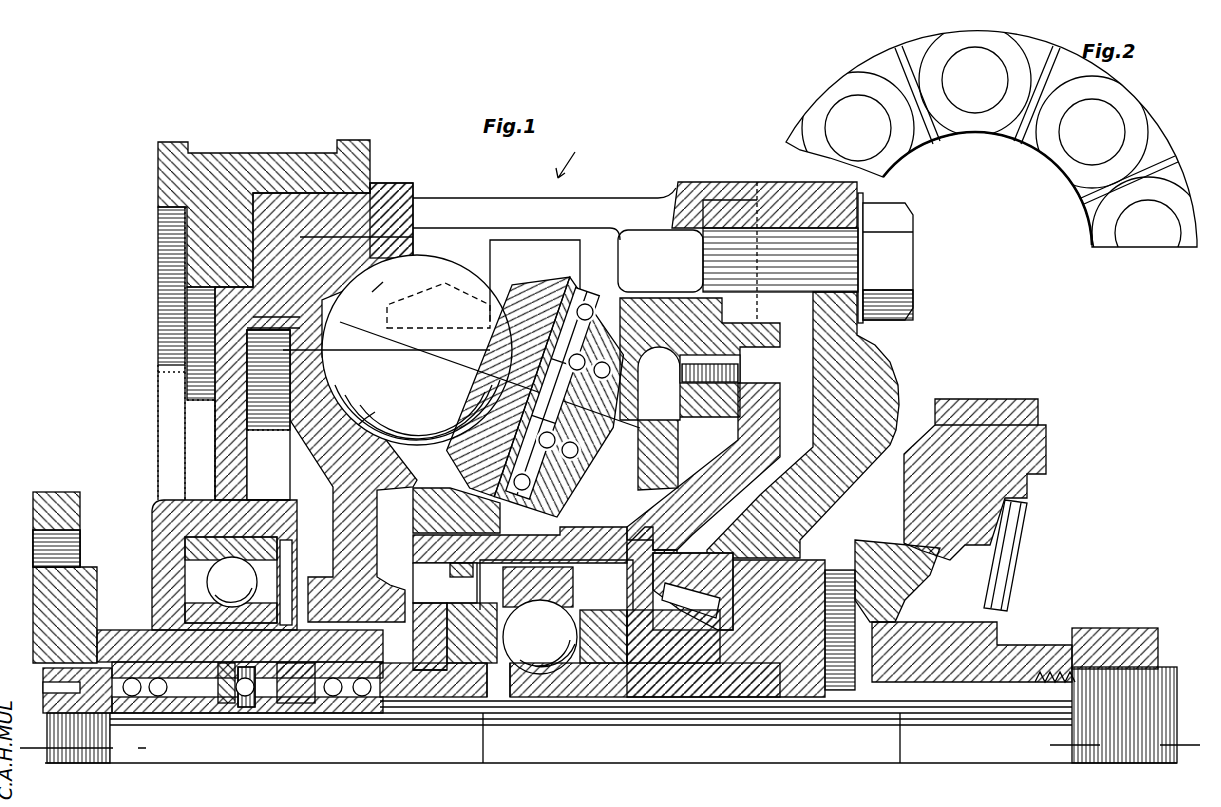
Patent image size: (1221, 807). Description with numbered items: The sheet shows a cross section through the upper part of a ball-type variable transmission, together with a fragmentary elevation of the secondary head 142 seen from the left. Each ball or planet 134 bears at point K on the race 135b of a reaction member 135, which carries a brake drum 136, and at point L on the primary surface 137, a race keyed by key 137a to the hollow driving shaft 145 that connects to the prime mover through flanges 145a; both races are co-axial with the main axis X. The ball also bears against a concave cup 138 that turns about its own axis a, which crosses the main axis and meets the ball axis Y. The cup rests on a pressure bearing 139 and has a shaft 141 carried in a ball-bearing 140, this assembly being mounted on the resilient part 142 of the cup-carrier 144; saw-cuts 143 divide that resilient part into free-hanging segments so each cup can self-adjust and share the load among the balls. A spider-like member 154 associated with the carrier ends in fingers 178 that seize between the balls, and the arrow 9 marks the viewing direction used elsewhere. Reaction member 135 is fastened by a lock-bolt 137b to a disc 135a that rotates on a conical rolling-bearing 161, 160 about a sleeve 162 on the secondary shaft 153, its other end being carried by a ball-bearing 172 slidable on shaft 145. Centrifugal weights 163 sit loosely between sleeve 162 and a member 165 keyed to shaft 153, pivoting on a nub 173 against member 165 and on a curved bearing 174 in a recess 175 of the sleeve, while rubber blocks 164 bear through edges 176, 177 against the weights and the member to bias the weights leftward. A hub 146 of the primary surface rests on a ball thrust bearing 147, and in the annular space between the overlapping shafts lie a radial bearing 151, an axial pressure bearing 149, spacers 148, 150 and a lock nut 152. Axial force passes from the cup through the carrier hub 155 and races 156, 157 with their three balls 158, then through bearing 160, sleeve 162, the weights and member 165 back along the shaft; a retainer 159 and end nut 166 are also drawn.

In FIG. 1, the ball 134 is at (432, 270).
In FIG. 1, the reaction member 135 is at (733, 172).
In FIG. 1, the disc 135a is at (862, 352).
In FIG. 1, the race 135b is at (418, 195).
In FIG. 1, the brake drum 136 is at (357, 142).
In FIG. 1, the primary surface 137 is at (318, 449).
In FIG. 1, the key 137a is at (413, 592).
In FIG. 1, the lock-bolt 137b is at (905, 262).
In FIG. 1, the cup 138 is at (527, 286).
In FIG. 1, the pressure bearing 139 is at (585, 285).
In FIG. 1, the ball-bearing 140 is at (612, 362).
In FIG. 1, the shaft 141 is at (606, 446).
In FIG. 1, the resilient part 142 is at (584, 490).
In FIG. 2, the resilient part 142 is at (950, 136).
In FIG. 2, the saw-cuts 143 is at (1085, 205).
In FIG. 1, the cup-carrier 144 is at (772, 418).
In FIG. 1, the driving shaft 145 is at (127, 640).
In FIG. 1, the flanges 145a is at (133, 503).
In FIG. 1, the hub 146 is at (392, 692).
In FIG. 1, the ball thrust bearing 147 is at (338, 707).
In FIG. 1, the spacing member 148 is at (291, 704).
In FIG. 1, the axial pressure bearing 149 is at (232, 704).
In FIG. 1, the spacing member 150 is at (215, 710).
In FIG. 1, the radial bearing 151 is at (157, 710).
In FIG. 1, the lock nut 152 is at (97, 677).
In FIG. 1, the secondary shaft 153 is at (1003, 763).
In FIG. 1, the member 154 is at (432, 527).
In FIG. 1, the hub 155 is at (438, 700).
In FIG. 1, the race 156 is at (497, 687).
In FIG. 1, the race 157 is at (600, 682).
In FIG. 1, the balls 158 is at (524, 660).
In FIG. 1, the retainer 159 is at (583, 581).
In FIG. 1, the conical rolling-bearing 160 is at (703, 660).
In FIG. 1, the conical rolling-bearing 161 is at (707, 586).
In FIG. 1, the sleeve 162 is at (763, 690).
In FIG. 1, the centrifugal weights 163 is at (992, 386).
In FIG. 1, the rubber blocks 164 is at (1010, 550).
In FIG. 1, the member 165 is at (990, 640).
In FIG. 1, the nut 166 is at (1112, 620).
In FIG. 1, the ball-bearing 172 is at (195, 548).
In FIG. 1, the bearing surface 173 is at (915, 590).
In FIG. 1, the bearing 174 is at (940, 545).
In FIG. 1, the recess 175 is at (935, 560).
In FIG. 1, the edge 176 is at (1030, 503).
In FIG. 1, the edge 177 is at (1005, 606).
In FIG. 1, the fingers 178 is at (438, 301).
In FIG. 1, the section arrow 9 is at (570, 162).
In FIG. 1, the main axis X is at (610, 734).
In FIG. 1, the point of contact K is at (370, 288).
In FIG. 1, the ball axis Y is at (386, 350).
In FIG. 1, the point of contact L is at (373, 410).
In FIG. 1, the cup axis a is at (502, 378).